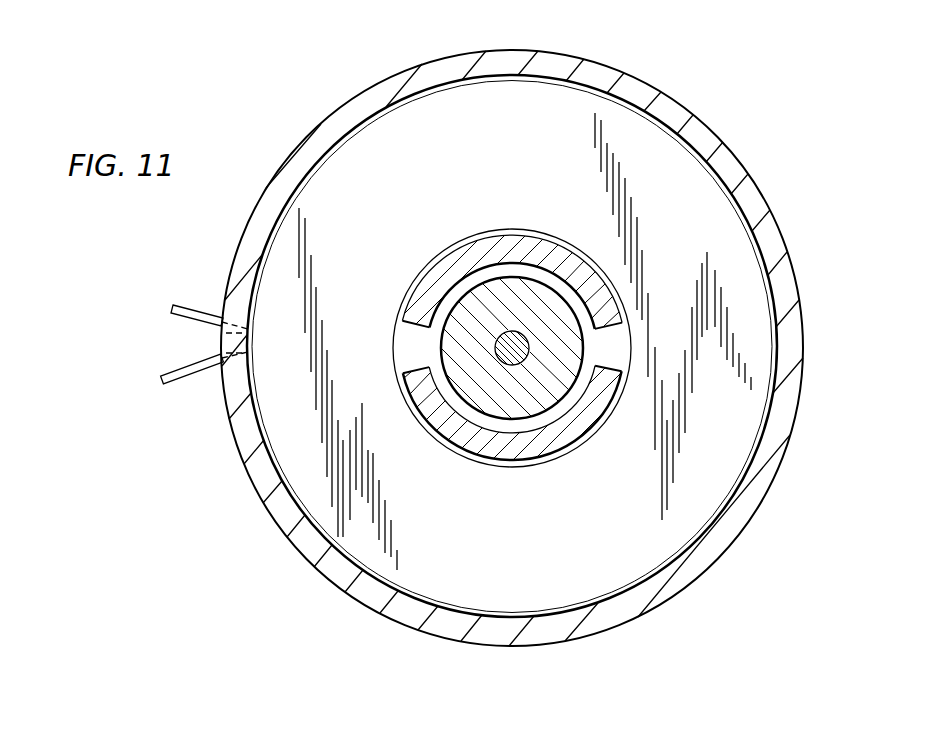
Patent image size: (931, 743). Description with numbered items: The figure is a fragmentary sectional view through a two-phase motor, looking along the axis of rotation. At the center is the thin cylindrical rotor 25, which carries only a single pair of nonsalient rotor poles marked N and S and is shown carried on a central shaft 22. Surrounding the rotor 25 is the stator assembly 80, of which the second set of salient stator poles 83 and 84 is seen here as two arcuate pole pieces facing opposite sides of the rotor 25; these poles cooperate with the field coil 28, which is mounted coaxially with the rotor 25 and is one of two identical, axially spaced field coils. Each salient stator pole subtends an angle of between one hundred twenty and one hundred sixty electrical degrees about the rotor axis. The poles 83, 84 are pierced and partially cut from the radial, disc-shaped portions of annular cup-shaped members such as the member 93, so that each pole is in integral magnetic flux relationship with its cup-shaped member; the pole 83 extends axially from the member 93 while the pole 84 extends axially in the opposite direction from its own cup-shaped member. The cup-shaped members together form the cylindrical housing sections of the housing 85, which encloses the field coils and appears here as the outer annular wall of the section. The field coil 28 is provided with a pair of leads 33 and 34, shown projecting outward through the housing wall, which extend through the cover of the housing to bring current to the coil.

The shaft 22 is at (513, 357).
The rotor 25 is at (482, 303).
The field coil 28 is at (337, 162).
The lead 33 is at (202, 307).
The lead 34 is at (177, 388).
The stator assembly 80 is at (248, 485).
The salient stator pole 83 is at (400, 323).
The salient stator pole 84 is at (400, 346).
The housing 85 is at (698, 591).
The cup-shaped member 93 is at (426, 64).